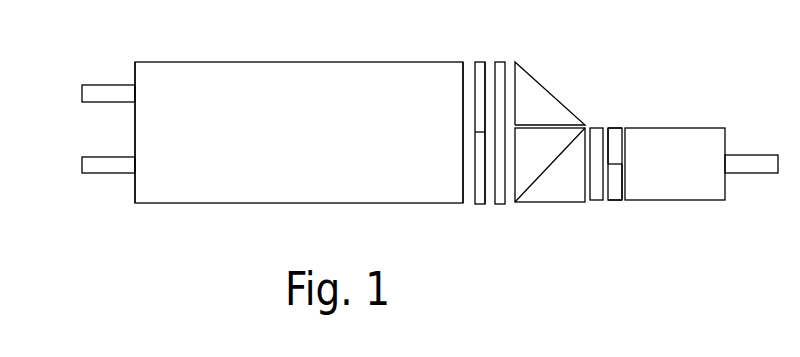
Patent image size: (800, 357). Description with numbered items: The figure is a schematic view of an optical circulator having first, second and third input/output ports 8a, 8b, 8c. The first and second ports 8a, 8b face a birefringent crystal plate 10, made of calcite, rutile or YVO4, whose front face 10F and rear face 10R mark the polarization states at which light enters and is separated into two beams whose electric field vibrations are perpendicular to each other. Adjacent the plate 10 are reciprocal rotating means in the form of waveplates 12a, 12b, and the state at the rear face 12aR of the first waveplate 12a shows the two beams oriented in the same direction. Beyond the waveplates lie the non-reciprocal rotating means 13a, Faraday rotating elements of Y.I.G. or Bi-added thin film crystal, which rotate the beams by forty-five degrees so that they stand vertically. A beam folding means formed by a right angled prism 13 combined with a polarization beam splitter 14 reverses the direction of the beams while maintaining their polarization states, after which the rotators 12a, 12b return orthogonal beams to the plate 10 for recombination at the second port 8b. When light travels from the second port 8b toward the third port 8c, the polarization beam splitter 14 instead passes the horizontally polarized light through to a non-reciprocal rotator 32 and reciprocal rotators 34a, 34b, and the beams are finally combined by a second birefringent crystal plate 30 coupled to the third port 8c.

The first input/output port 8a is at (103, 83).
The second input/output port 8b is at (95, 155).
The third input/output port 8c is at (762, 155).
The birefringent crystal plate 10 is at (295, 62).
The front face of birefringent crystal plate 10F is at (136, 203).
The rear face of birefringent crystal plate 10R is at (465, 204).
The reciprocal rotating means 12a is at (472, 61).
The rear face of reciprocal waveplate 12aR is at (487, 58).
The reciprocal rotating means 12b is at (485, 204).
The right angled prism 13 is at (585, 127).
The non-reciprocal rotating means 13a is at (507, 204).
The polarization beam splitter 14 is at (567, 202).
The birefringent crystal plate 30 is at (717, 128).
The non-reciprocal rotating means 32 is at (598, 128).
The reciprocal rotating means 34a is at (613, 128).
The reciprocal rotating means 34b is at (610, 200).